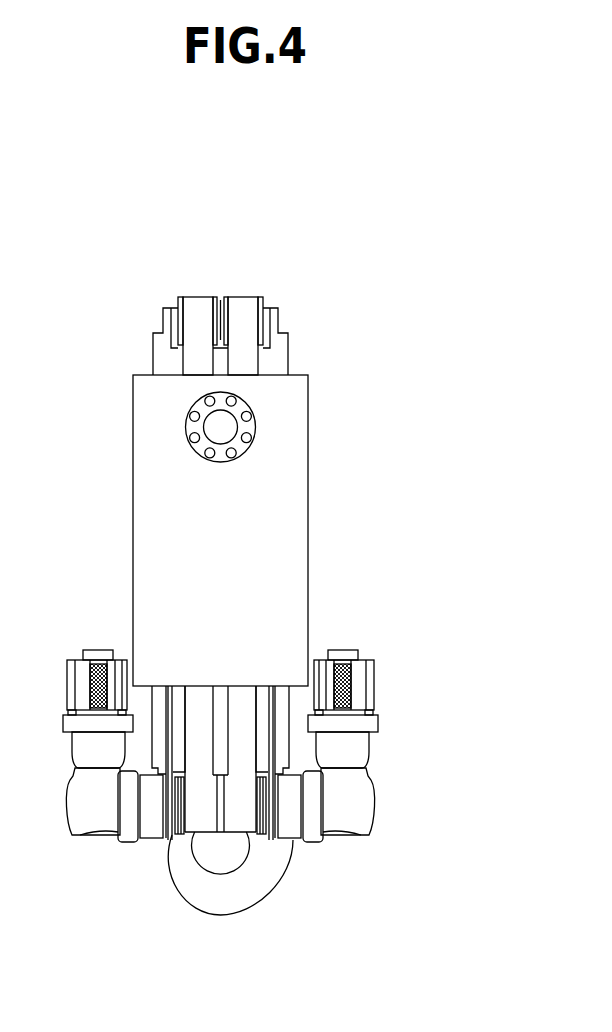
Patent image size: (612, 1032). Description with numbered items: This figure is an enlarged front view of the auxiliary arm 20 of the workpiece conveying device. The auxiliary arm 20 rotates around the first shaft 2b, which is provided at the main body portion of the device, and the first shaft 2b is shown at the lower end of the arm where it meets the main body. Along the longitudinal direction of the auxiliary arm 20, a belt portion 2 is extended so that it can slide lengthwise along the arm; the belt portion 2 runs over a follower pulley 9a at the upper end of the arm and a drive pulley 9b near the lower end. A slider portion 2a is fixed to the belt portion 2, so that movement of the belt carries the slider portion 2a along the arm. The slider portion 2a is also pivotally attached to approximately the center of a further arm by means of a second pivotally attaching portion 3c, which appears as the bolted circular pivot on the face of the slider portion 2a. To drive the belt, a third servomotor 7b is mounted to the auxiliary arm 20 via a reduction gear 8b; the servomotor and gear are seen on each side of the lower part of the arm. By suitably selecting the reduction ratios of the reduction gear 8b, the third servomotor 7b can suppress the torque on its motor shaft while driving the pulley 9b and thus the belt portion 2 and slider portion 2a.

The auxiliary arm 20 is at (387, 308).
The belt portion 2 is at (227, 299).
The slider portion 2a is at (270, 532).
The first shaft 2b is at (228, 863).
The second pivotally attaching portion 3c is at (235, 427).
The third servomotor 7b is at (360, 673).
The reduction gear 8b is at (376, 797).
The follower pulley 9a is at (180, 298).
The drive pulley 9b is at (151, 843).